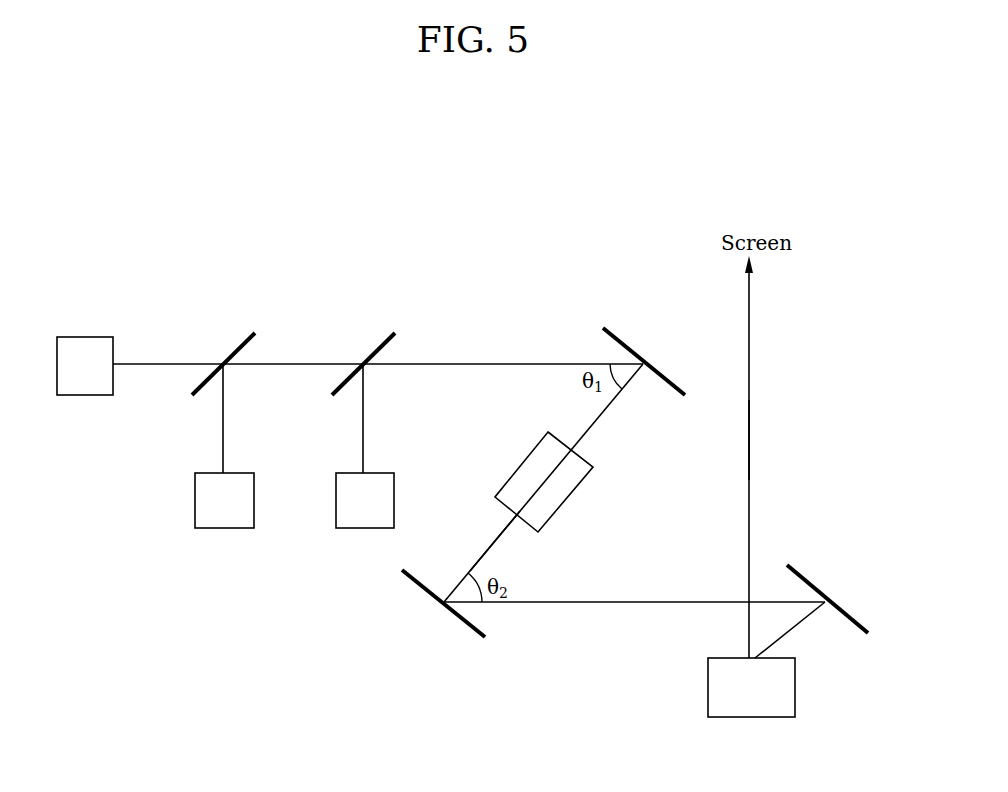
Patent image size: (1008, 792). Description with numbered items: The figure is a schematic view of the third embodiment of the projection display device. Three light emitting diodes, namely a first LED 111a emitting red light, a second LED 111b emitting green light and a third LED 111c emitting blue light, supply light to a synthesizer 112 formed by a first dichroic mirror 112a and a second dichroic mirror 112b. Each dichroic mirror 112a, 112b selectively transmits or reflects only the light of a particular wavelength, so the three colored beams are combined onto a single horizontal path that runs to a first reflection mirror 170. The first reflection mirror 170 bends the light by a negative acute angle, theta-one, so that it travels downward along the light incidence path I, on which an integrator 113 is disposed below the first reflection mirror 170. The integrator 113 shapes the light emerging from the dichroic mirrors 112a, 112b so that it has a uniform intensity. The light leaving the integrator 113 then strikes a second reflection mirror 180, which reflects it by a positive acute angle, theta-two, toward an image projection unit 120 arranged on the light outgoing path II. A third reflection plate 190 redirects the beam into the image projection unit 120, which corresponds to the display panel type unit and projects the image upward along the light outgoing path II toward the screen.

The first light emitting diode 111a is at (80, 337).
The second light emitting diode 111b is at (195, 502).
The third light emitting diode 111c is at (394, 500).
The synthesizer 112 is at (380, 266).
The first dichroic mirror 112a is at (233, 347).
The second dichroic mirror 112b is at (375, 347).
The integrator 113 is at (568, 490).
The first reflection mirror 170 is at (624, 338).
The second reflection mirror 180 is at (415, 582).
The third reflection plate 190 is at (808, 580).
The image projection unit 120 is at (795, 688).
The light incidence path I is at (485, 555).
The light outgoing path II is at (751, 435).